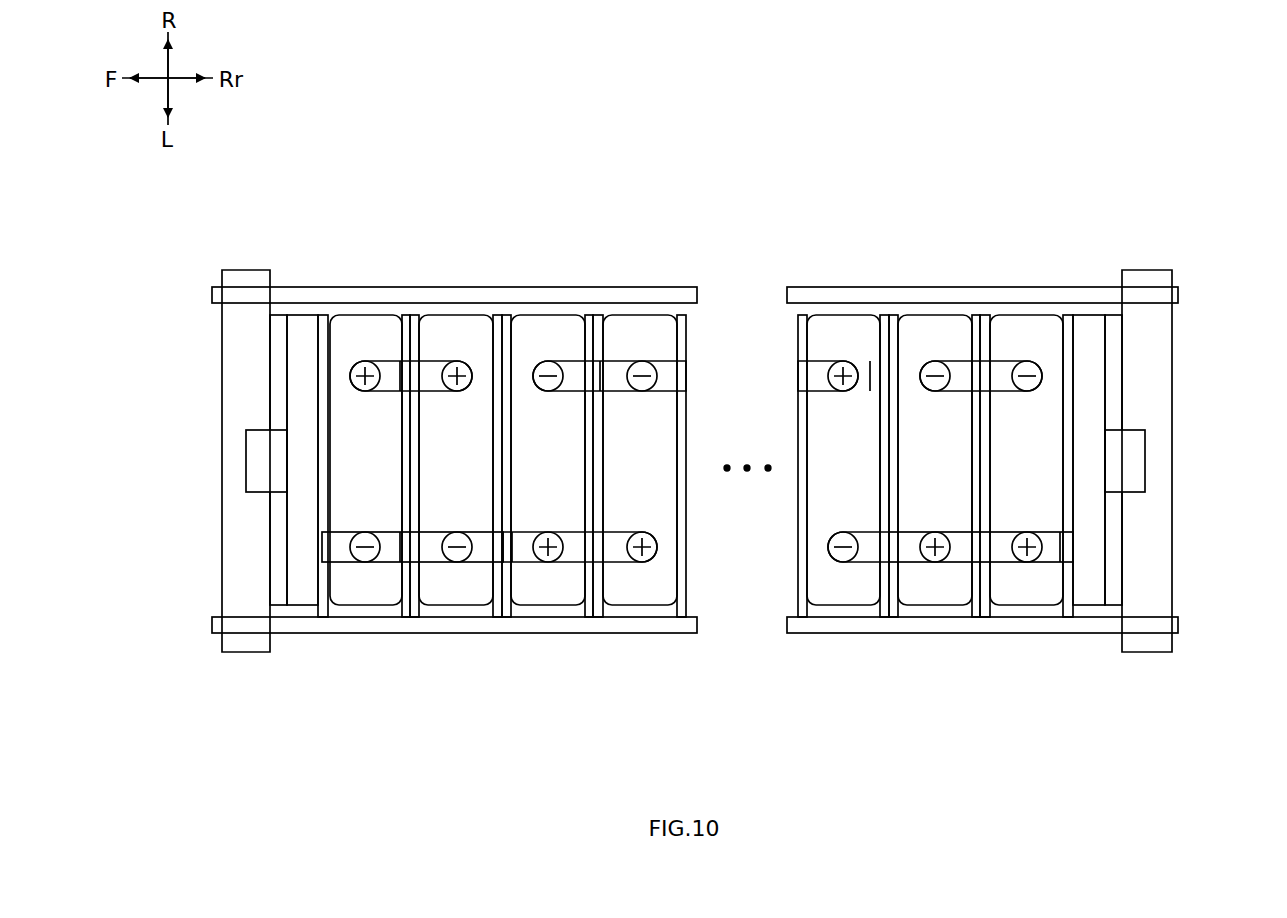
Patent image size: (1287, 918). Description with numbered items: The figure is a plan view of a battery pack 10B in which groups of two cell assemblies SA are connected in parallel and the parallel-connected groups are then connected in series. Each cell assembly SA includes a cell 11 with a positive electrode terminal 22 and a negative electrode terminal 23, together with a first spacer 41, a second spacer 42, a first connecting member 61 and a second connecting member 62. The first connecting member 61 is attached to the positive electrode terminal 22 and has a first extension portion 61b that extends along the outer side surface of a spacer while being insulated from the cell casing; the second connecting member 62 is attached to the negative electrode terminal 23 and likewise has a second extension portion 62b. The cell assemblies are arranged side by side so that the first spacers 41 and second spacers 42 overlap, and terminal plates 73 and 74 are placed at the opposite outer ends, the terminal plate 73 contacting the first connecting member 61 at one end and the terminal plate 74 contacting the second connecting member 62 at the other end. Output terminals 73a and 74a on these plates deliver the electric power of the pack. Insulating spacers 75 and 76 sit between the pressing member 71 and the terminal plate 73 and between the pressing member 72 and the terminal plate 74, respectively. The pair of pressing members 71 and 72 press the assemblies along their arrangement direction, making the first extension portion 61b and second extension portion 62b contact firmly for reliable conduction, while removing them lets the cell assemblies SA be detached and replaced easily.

The battery pack 10B is at (738, 208).
The cell 11 is at (666, 300).
The positive electrode terminal 22 is at (354, 365).
The negative electrode terminal 23 is at (540, 366).
The first spacer 41 is at (406, 313).
The second spacer 42 is at (415, 313).
The first connecting member 61 is at (383, 360).
The first extension portion 61b is at (398, 390).
The second connecting member 62 is at (556, 360).
The second extension portion 62b is at (570, 386).
The pressing member 71 is at (1172, 372).
The pressing member 72 is at (220, 362).
The terminal plate 73 is at (1100, 532).
The output terminal 73a is at (1145, 460).
The terminal plate 74 is at (300, 512).
The output terminal 74a is at (246, 465).
The insulating spacer 75 is at (1113, 607).
The insulating spacer 76 is at (278, 607).
The cell assembly SA is at (828, 313).